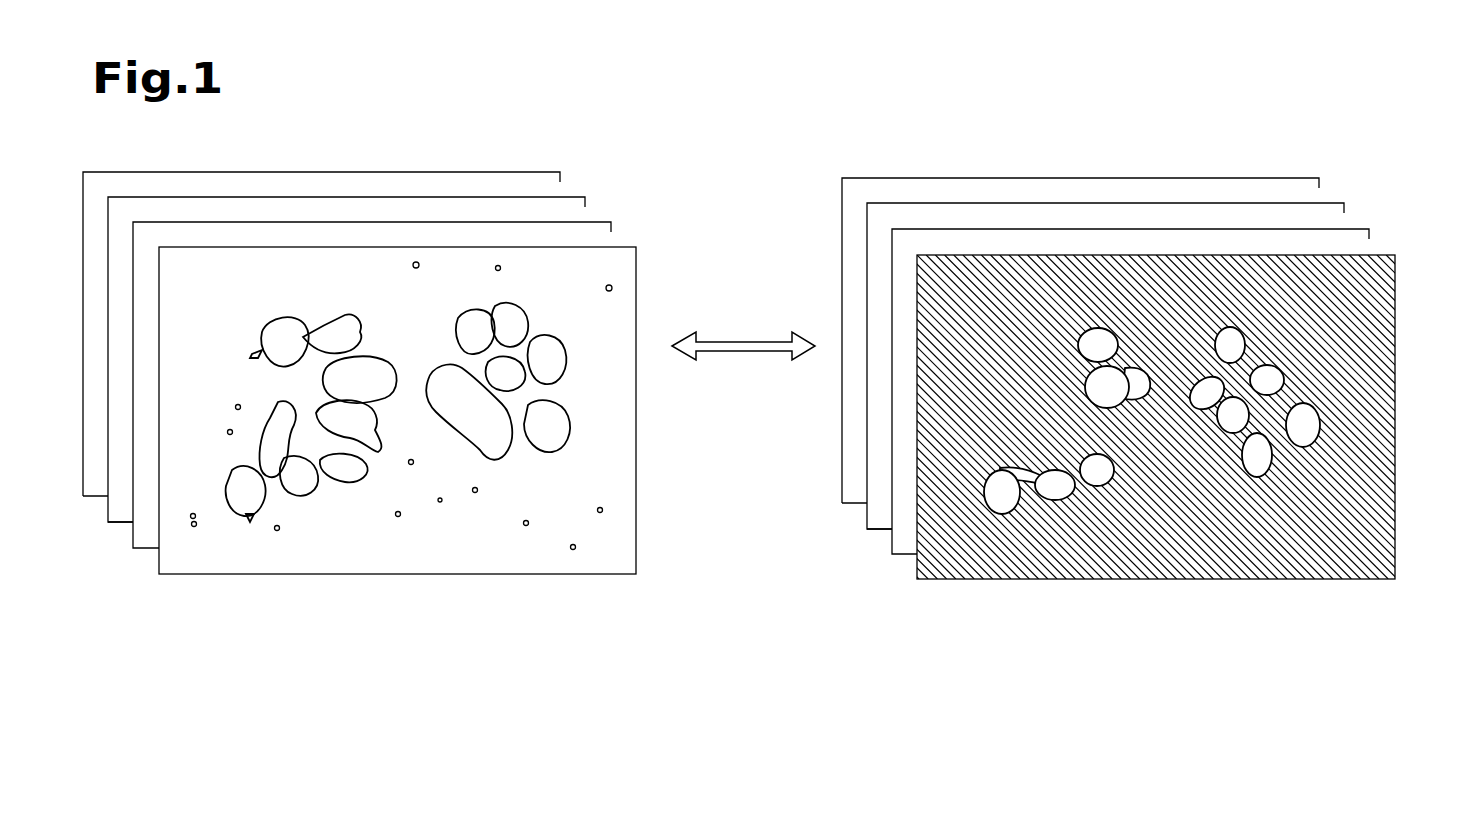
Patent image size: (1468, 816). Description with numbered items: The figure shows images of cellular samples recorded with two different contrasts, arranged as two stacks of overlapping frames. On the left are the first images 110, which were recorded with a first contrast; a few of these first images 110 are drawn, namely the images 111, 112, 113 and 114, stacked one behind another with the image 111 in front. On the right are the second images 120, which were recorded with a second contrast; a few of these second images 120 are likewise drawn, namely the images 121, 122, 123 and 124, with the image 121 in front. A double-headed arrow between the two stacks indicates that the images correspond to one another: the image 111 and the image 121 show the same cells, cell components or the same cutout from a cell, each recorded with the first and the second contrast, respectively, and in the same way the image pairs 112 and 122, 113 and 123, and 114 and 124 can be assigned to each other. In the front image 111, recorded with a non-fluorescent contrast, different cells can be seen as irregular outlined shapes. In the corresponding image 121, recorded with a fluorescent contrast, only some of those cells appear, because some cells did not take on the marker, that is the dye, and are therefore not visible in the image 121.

The first images 110 is at (421, 436).
The first image with non-fluorescent contrast 111 is at (636, 262).
The first image 112 is at (611, 232).
The first image 113 is at (585, 207).
The first image 114 is at (560, 182).
The second images 120 is at (1008, 441).
The second image with fluorescent contrast 121 is at (1395, 262).
The second image 122 is at (1369, 239).
The second image 123 is at (1344, 213).
The second image 124 is at (1319, 188).